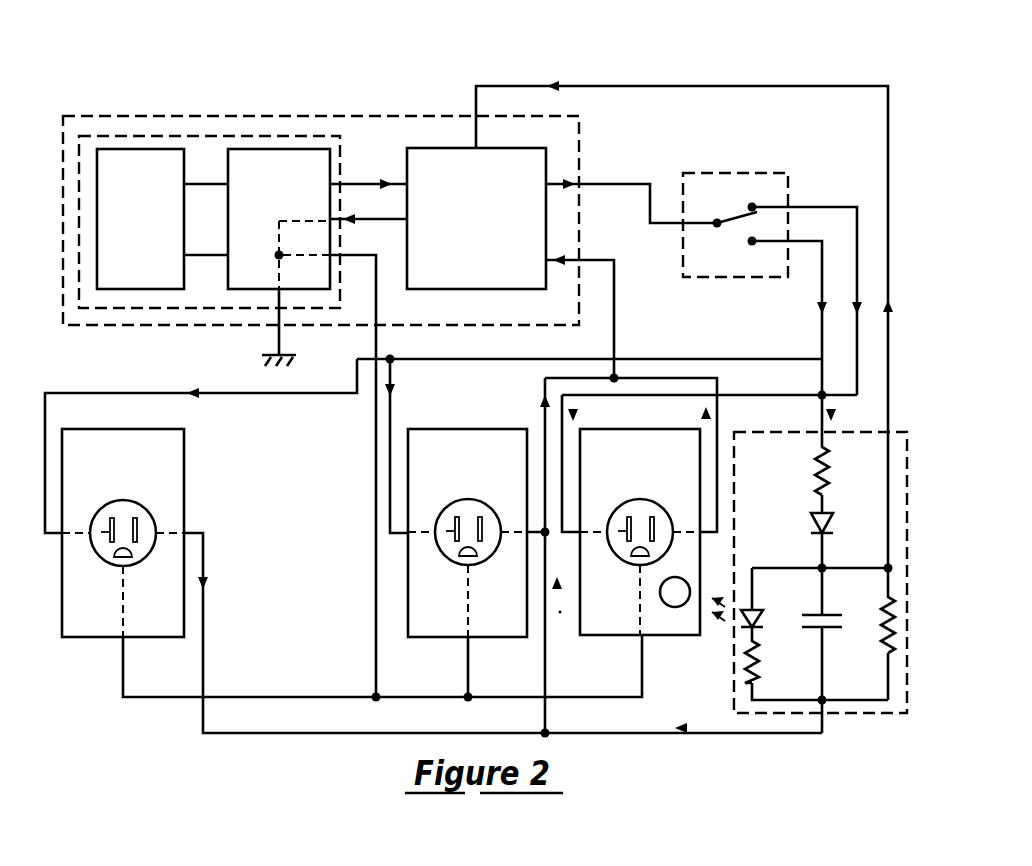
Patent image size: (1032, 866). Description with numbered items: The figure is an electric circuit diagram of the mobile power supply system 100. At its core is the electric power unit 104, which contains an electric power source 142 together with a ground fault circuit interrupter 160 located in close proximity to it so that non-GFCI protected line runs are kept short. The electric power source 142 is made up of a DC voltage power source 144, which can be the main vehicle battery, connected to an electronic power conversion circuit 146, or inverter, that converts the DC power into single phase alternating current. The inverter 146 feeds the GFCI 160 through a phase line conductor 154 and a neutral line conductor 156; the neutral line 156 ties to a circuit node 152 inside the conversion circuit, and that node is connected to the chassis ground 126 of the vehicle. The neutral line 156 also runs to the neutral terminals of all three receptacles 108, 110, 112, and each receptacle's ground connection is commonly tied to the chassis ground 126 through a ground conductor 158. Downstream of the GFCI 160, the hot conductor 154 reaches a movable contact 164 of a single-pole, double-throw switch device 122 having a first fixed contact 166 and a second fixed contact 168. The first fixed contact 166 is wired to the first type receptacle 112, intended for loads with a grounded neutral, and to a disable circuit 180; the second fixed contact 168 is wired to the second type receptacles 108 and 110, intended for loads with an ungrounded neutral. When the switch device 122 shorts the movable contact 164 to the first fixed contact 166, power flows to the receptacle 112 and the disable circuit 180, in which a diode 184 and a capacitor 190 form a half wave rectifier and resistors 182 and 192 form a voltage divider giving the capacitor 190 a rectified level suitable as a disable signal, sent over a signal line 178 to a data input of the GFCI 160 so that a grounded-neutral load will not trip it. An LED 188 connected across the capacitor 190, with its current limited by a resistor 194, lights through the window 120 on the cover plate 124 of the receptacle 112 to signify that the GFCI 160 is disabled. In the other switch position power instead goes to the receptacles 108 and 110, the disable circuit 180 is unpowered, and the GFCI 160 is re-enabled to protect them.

The mobile power supply system 100 is at (130, 90).
The electric power unit 104 is at (260, 116).
The receptacle 108 is at (123, 500).
The receptacle 110 is at (468, 499).
The receptacle 112 is at (640, 499).
The window 120 is at (675, 607).
The switch device 122 is at (772, 272).
The cover plate 124 is at (652, 538).
The chassis ground 126 is at (290, 352).
The electric power source 142 is at (280, 137).
The DC voltage power source 144 is at (165, 136).
The electronic power conversion circuit 146 is at (323, 127).
The circuit node 152 is at (275, 255).
The phase line conductor 154 is at (396, 180).
The neutral line conductor 156 is at (400, 226).
The ground conductor 158 is at (377, 311).
The ground fault circuit interrupter 160 is at (435, 148).
The movable contact 164 is at (721, 243).
The first fixed contact 166 is at (800, 285).
The second fixed contact 168 is at (782, 340).
The signal line 178 is at (697, 86).
The disable circuit 180 is at (819, 585).
The resistor 182 is at (812, 468).
The diode 184 is at (833, 519).
The LED 188 is at (765, 613).
The capacitor 190 is at (833, 612).
The resistor 192 is at (882, 640).
The resistor 194 is at (757, 688).